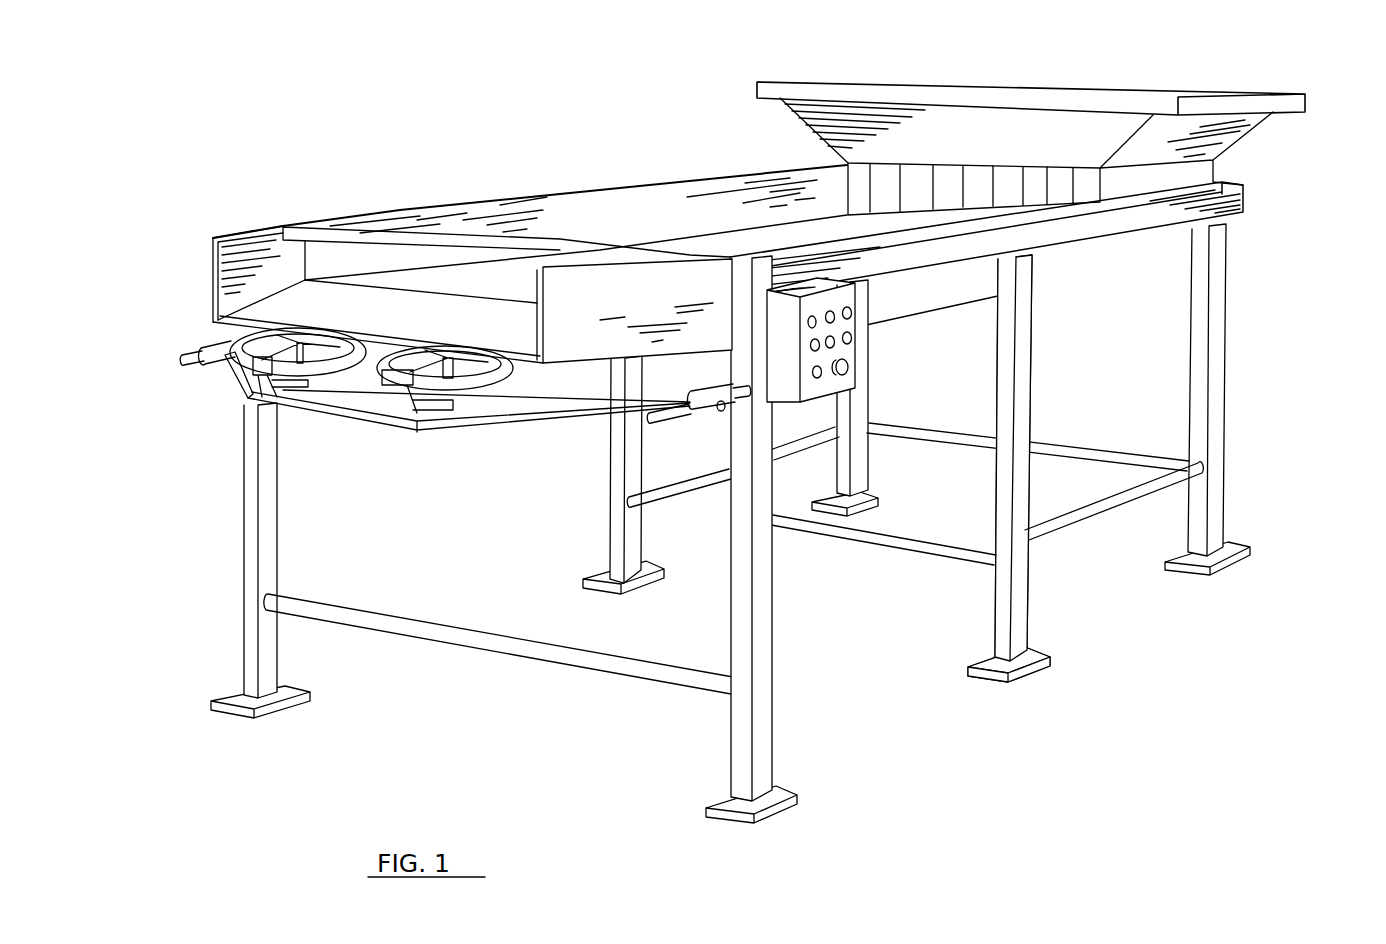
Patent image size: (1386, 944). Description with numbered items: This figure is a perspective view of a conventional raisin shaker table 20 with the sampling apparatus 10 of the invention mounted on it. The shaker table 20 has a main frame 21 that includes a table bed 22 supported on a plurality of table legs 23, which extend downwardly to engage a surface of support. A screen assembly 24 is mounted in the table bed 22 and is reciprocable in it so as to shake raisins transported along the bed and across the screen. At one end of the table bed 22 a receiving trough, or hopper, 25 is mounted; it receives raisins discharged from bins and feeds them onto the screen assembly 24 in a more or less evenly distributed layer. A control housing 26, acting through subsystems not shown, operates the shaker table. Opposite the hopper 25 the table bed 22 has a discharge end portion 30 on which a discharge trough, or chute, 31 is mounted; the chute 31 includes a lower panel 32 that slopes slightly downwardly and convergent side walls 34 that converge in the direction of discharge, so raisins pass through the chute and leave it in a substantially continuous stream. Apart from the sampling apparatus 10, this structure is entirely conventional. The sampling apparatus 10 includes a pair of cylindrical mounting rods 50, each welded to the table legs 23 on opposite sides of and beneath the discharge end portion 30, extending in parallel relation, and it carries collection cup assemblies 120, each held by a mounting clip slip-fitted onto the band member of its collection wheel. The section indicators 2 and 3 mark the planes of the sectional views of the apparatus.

The sampling apparatus 10 is at (425, 425).
The raisin shaker table 20 is at (1245, 247).
The main frame 21 is at (1227, 455).
The table bed 22 is at (618, 195).
The table legs 23 is at (238, 542).
The screen assembly 24 is at (727, 243).
The hopper 25 is at (1207, 93).
The control housing 26 is at (857, 350).
The discharge end portion 30 is at (422, 250).
The discharge chute 31 is at (237, 235).
The lower panel 32 is at (212, 306).
The convergent side walls 34 is at (216, 263).
The cylindrical mounting rods 50 is at (182, 363).
The collection cup assembly 120 is at (380, 392).
The section line 2- 2 is at (210, 325).
The section line 3- 3 is at (128, 398).